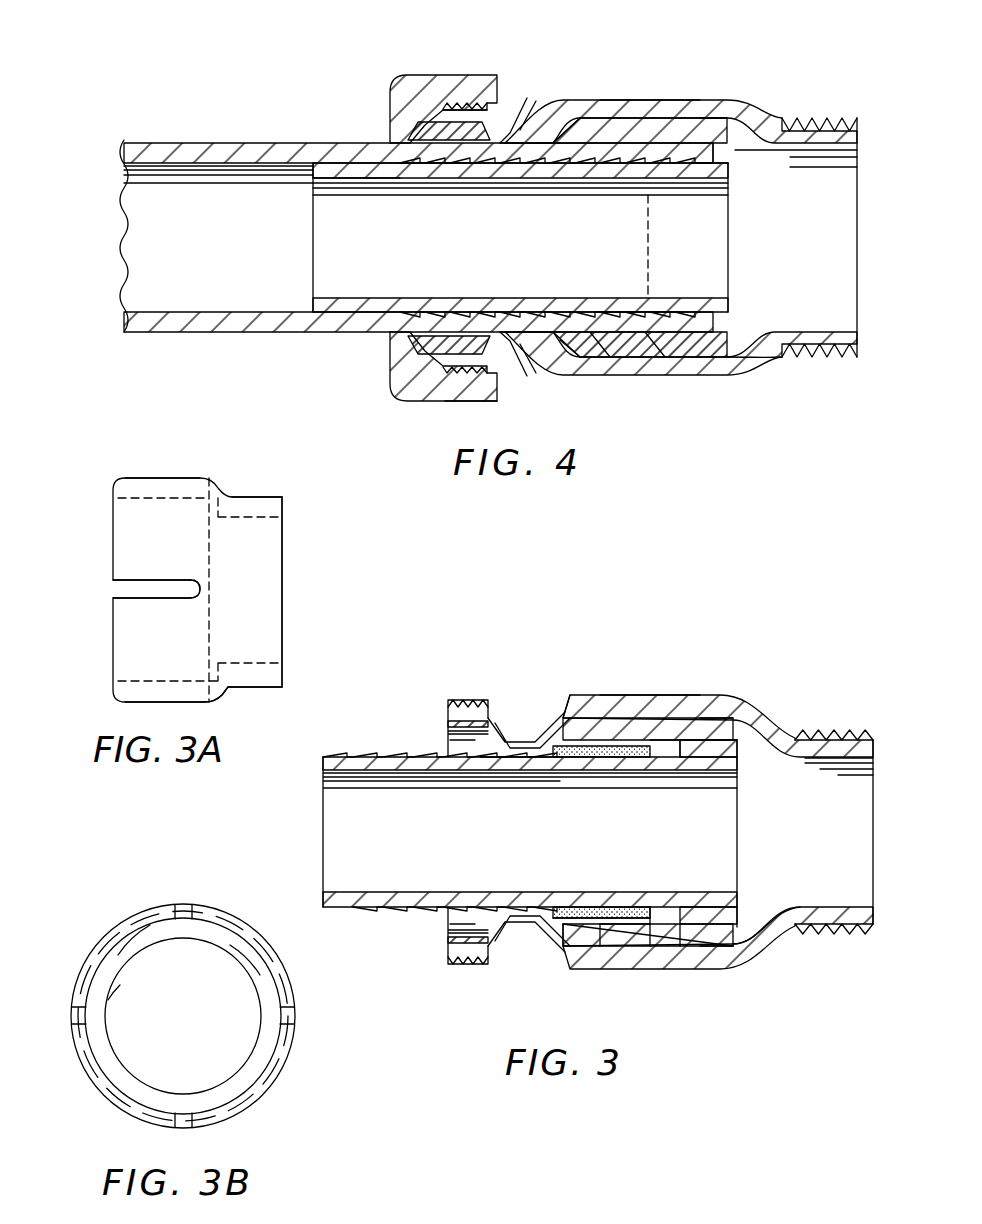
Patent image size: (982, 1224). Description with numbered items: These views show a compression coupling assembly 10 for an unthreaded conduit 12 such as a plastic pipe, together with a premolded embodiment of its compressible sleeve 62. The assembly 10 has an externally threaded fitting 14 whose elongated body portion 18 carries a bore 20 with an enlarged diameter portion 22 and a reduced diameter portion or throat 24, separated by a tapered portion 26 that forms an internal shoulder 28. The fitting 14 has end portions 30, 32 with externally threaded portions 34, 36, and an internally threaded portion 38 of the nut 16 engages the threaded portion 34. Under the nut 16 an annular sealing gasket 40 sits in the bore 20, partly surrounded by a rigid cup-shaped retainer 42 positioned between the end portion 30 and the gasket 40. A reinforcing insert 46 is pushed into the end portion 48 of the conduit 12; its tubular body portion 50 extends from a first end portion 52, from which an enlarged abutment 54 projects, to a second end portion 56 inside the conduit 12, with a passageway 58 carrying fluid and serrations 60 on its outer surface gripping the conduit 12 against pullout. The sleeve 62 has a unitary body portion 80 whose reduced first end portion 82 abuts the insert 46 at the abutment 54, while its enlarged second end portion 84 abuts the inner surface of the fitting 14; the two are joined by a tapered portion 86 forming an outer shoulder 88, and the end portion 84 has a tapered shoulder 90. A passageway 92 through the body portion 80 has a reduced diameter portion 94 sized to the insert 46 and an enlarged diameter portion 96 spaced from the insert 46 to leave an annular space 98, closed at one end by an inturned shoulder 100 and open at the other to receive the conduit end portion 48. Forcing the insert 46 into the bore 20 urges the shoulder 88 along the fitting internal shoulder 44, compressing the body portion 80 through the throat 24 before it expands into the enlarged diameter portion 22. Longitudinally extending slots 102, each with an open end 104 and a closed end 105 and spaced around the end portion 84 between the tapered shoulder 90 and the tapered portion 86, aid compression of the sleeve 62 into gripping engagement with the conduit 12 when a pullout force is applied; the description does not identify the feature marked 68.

In FIG. 4, the compression coupling assembly 10 is at (265, 60).
In FIG. 4, the conduit 12 is at (180, 143).
In FIG. 3, the conduit 12 is at (366, 764).
In FIG. 4, the fitting 14 is at (618, 100).
In FIG. 3, the fitting 14 is at (622, 695).
In FIG. 4, the nut 16 is at (445, 82).
In FIG. 4, the elongated body portion 18 is at (648, 110).
In FIG. 3, the elongated body portion 18 is at (670, 700).
In FIG. 4, the bore 20 is at (595, 118).
In FIG. 3, the bore 20 is at (608, 718).
In FIG. 4, the enlarged diameter portion 22 is at (683, 118).
In FIG. 3, the enlarged diameter portion 22 is at (712, 718).
In FIG. 4, the reduced diameter portion 24 is at (510, 135).
In FIG. 3, the reduced diameter portion 24 is at (520, 740).
In FIG. 4, the tapered portion 26 is at (533, 345).
In FIG. 3, the tapered portion 26 is at (530, 942).
In FIG. 4, the internal shoulder 28 is at (548, 335).
In FIG. 3, the internal shoulder 28 is at (550, 950).
In FIG. 4, the end portion 30 is at (445, 112).
In FIG. 3, the end portion 30 is at (460, 712).
In FIG. 4, the end portion 32 is at (828, 135).
In FIG. 3, the end portion 32 is at (835, 738).
In FIG. 4, the externally threaded portion 34 is at (435, 362).
In FIG. 3, the externally threaded portion 34 is at (450, 960).
In FIG. 4, the externally threaded portion 36 is at (817, 345).
In FIG. 3, the externally threaded portion 36 is at (840, 937).
In FIG. 4, the internally threaded portion 38 is at (460, 395).
In FIG. 4, the annular sealing gasket 40 is at (410, 135).
In FIG. 4, the cup-shaped retainer 42 is at (425, 340).
In FIG. 4, the fitting internal shoulder 44 is at (475, 145).
In FIG. 3, the fitting internal shoulder 44 is at (490, 757).
In FIG. 4, the reinforcing insert 46 is at (313, 228).
In FIG. 4, the end portion 48 is at (625, 318).
In FIG. 4, the tubular body portion 50 is at (527, 165).
In FIG. 4, the first end portion 52 is at (705, 165).
In FIG. 3, the first end portion 52 is at (720, 762).
In FIG. 4, the abutment 54 is at (722, 148).
In FIG. 3, the abutment 54 is at (735, 743).
In FIG. 4, the second end portion 56 is at (355, 170).
In FIG. 4, the passageway 58 is at (488, 252).
In FIG. 4, the serrations 60 is at (548, 312).
In FIG. 4, the compressible sleeve 62 is at (675, 340).
In FIG. 3A, the compressible sleeve 62 is at (172, 472).
In FIG. 3, the compressible sleeve 62 is at (685, 935).
In FIG. 4, the ferrule shoulder 68 is at (735, 347).
In FIG. 3, the ferrule shoulder 68 is at (772, 925).
In FIG. 4, the unitary body portion 80 is at (598, 340).
In FIG. 3A, the unitary body portion 80 is at (250, 560).
In FIG. 3B, the unitary body portion 80 is at (76, 968).
In FIG. 3, the unitary body portion 80 is at (608, 935).
In FIG. 3A, the first end portion 82 is at (263, 678).
In FIG. 3, the first end portion 82 is at (726, 932).
In FIG. 4, the second end portion 84 is at (567, 340).
In FIG. 3A, the second end portion 84 is at (133, 692).
In FIG. 3, the second end portion 84 is at (575, 940).
In FIG. 4, the tapered portion 86 is at (652, 340).
In FIG. 3A, the tapered portion 86 is at (210, 690).
In FIG. 3, the tapered portion 86 is at (655, 945).
In FIG. 3A, the outer shoulder 88 is at (228, 490).
In FIG. 3B, the outer shoulder 88 is at (238, 925).
In FIG. 3, the outer shoulder 88 is at (680, 940).
In FIG. 4, the tapered shoulder 90 is at (557, 130).
In FIG. 3A, the tapered shoulder 90 is at (120, 480).
In FIG. 3B, the tapered shoulder 90 is at (270, 965).
In FIG. 3, the tapered shoulder 90 is at (565, 735).
In FIG. 3B, the passageway 92 is at (130, 988).
In FIG. 3, the passageway 92 is at (548, 915).
In FIG. 3A, the reduced diameter portion 94 is at (235, 520).
In FIG. 3B, the reduced diameter portion 94 is at (203, 940).
In FIG. 3, the reduced diameter portion 94 is at (708, 760).
In FIG. 3A, the enlarged diameter portion 96 is at (140, 498).
In FIG. 3B, the enlarged diameter portion 96 is at (145, 925).
In FIG. 3, the enlarged diameter portion 96 is at (606, 920).
In FIG. 3, the annular space 98 is at (580, 922).
In FIG. 3A, the inturned shoulder 100 is at (212, 668).
In FIG. 3B, the inturned shoulder 100 is at (242, 952).
In FIG. 3, the inturned shoulder 100 is at (655, 748).
In FIG. 3A, the slots 102 is at (125, 596).
In FIG. 3B, the slots 102 is at (181, 905).
In FIG. 3A, the open end 104 is at (118, 580).
In FIG. 3A, the closed end 105 is at (185, 585).
In FIG. 3, the closed end 105 is at (633, 915).